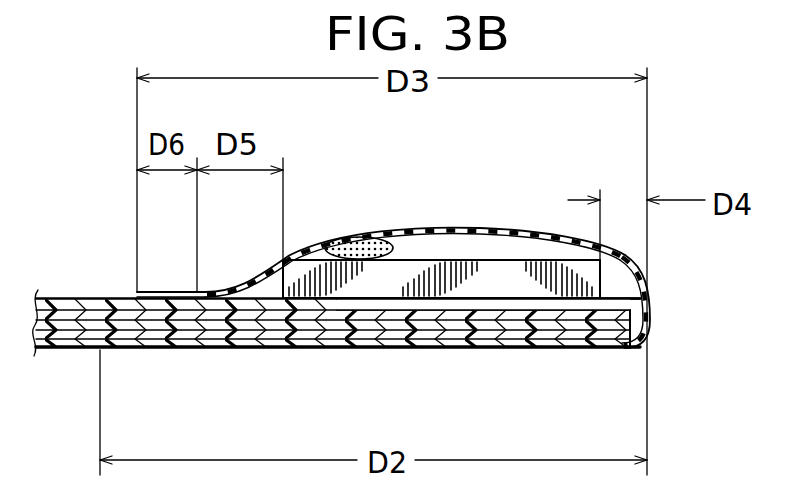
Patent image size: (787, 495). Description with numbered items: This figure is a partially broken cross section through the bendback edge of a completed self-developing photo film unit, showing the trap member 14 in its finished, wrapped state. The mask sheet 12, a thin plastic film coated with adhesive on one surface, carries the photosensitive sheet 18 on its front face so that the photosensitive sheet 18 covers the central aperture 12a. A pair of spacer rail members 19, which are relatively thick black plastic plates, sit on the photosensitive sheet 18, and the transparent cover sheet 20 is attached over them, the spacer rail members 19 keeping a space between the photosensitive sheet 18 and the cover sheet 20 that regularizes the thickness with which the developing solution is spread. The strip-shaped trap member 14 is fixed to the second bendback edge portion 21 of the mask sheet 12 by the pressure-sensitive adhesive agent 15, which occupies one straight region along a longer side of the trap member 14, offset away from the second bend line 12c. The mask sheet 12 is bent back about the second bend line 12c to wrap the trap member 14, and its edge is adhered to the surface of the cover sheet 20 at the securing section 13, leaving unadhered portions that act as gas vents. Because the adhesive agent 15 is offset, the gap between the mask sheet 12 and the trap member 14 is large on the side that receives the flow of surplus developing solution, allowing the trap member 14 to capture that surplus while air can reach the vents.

The mask sheet 12 is at (398, 276).
The aperture 12a is at (100, 350).
The second bend line 12c is at (650, 310).
The securing section 13 is at (160, 292).
The trap member 14 is at (483, 262).
The pressure-sensitive adhesive agent 15 is at (352, 240).
The photosensitive sheet 18 is at (455, 322).
The spacer rail members 19 is at (617, 310).
The cover sheet 20 is at (336, 326).
The second bendback edge portion 21 is at (531, 214).